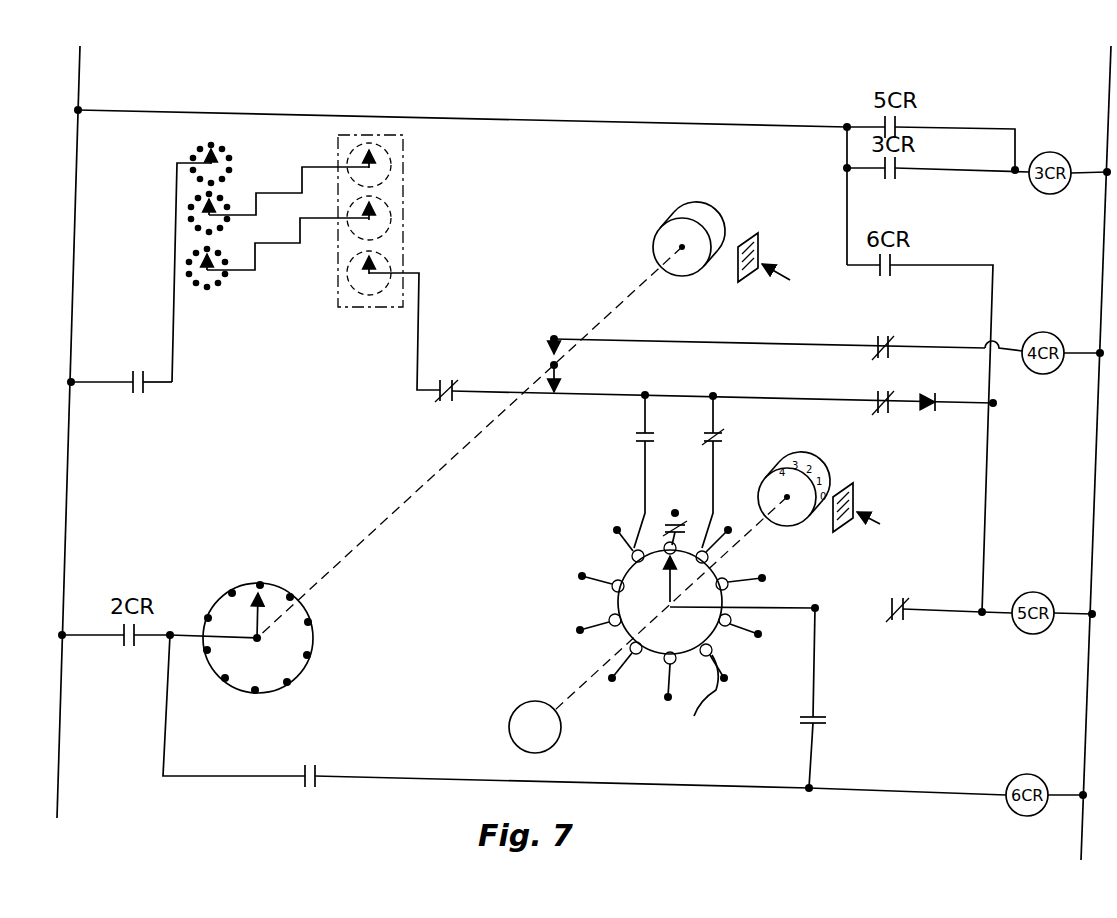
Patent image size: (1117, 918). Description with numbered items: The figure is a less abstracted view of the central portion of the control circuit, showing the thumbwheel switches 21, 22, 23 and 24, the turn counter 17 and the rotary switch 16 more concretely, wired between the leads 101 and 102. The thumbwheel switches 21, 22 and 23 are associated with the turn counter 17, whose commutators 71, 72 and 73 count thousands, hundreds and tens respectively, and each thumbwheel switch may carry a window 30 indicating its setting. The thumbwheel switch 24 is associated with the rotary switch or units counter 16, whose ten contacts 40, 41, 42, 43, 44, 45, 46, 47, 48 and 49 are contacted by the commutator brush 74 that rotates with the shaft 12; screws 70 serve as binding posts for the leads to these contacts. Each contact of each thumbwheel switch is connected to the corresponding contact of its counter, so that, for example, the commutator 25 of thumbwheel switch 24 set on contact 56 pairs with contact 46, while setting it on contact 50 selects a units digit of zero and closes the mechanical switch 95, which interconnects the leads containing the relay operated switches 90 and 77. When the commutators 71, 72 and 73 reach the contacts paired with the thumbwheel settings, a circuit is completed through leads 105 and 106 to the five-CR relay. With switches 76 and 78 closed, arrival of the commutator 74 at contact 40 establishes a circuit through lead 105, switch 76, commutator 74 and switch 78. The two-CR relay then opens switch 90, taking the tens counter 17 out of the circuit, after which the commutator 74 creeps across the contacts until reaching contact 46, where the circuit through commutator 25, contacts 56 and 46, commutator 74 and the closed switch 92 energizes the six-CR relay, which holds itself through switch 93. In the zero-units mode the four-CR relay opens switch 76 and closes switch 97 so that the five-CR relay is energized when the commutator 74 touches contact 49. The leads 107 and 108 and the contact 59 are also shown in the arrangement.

The lead 101 is at (76, 246).
The lead 102 is at (1097, 418).
The thumbwheel switch 21 is at (192, 148).
The thumbwheel switch 22 is at (190, 205).
The thumbwheel switch 23 is at (190, 259).
The commutator 71 is at (365, 160).
The commutator 72 is at (365, 212).
The commutator 73 is at (365, 266).
The turn counter 17 is at (405, 180).
The lead 105 is at (116, 384).
The switch 90 is at (441, 394).
The mechanical switch 95 is at (549, 350).
The window 30 is at (759, 248).
The switch 77 is at (876, 349).
The lead 106 is at (904, 406).
The switch 97 is at (640, 432).
The conductor 107 is at (716, 418).
The switch 76 is at (722, 440).
The rotary switch 16 is at (592, 550).
The contact member 49 is at (632, 558).
The contact member 40 is at (666, 534).
The contact member 41 is at (707, 555).
The contact member 42 is at (741, 570).
The contact member 48 is at (612, 590).
The commutator brush 74 is at (666, 586).
The contact member 43 is at (732, 622).
The contact member 47 is at (598, 635).
The contact member 44 is at (713, 652).
The contact member 46 is at (638, 656).
The contact member 45 is at (676, 666).
The screw 70 is at (707, 692).
The shaft 12 is at (535, 727).
The thumbwheel switch 24 is at (246, 580).
The contact 50 is at (262, 584).
The switch contact 59 is at (230, 594).
The commutator 25 is at (254, 624).
The contact 56 is at (226, 682).
The switch 93 is at (318, 782).
The switch 78 is at (906, 606).
The conductor 108 is at (940, 614).
The switch 92 is at (822, 730).